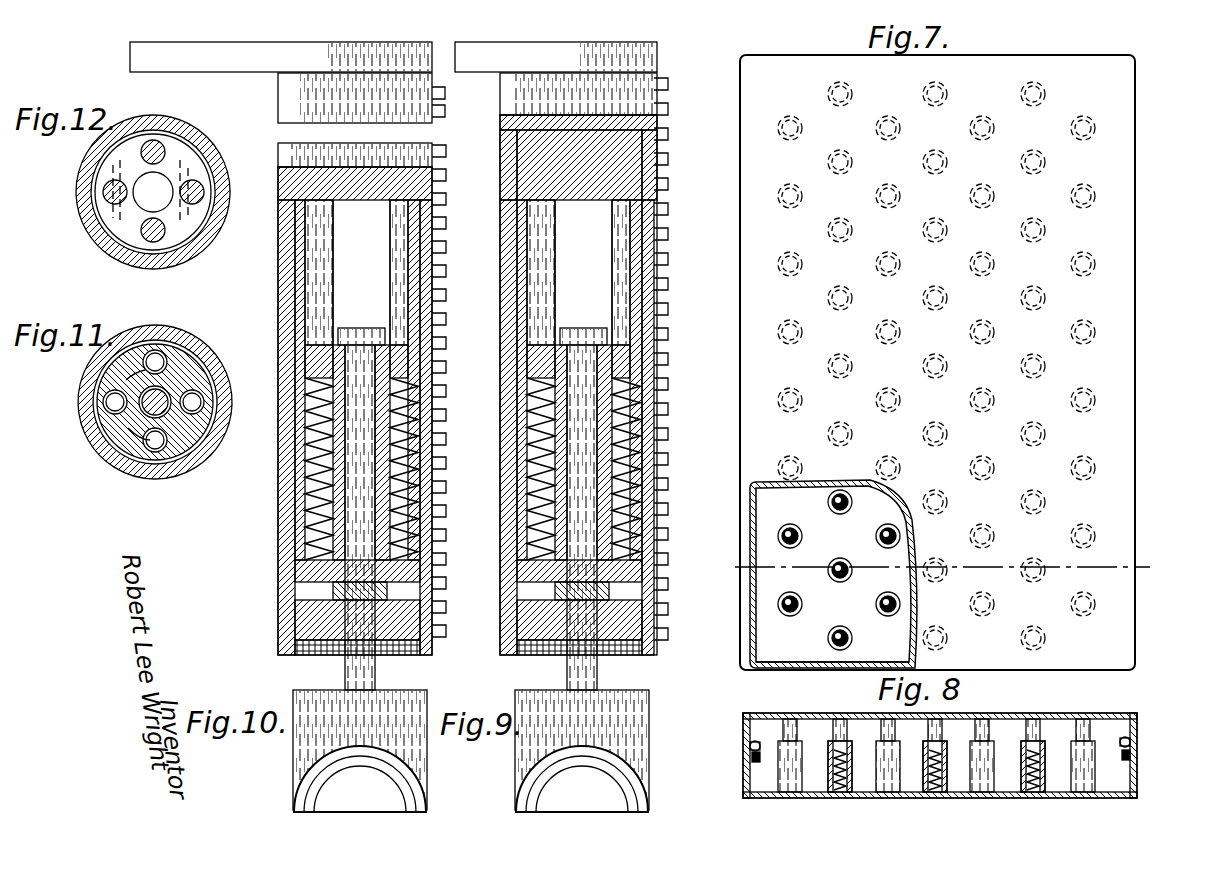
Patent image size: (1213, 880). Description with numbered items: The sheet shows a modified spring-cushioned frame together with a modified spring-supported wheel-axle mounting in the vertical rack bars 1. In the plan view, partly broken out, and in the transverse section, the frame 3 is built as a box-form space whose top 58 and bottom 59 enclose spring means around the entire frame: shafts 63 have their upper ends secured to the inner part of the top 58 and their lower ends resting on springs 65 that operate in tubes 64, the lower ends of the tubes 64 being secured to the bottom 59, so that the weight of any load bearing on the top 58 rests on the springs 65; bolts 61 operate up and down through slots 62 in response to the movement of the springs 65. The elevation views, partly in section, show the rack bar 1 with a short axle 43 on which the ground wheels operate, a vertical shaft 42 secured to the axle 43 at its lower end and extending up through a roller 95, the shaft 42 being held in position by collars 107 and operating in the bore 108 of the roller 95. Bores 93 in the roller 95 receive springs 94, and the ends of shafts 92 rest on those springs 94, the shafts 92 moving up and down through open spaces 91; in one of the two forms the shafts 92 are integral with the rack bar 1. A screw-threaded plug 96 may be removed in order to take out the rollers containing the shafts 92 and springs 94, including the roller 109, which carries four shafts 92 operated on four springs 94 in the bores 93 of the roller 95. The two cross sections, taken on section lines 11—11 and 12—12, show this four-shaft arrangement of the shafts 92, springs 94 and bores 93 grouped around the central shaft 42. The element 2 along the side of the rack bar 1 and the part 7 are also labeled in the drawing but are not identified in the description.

In FIG. 12, the rack bar 1 is at (118, 238).
In FIG. 11, the rack bar 1 is at (140, 478).
In FIG. 10, the rack bar 1 is at (285, 92).
In FIG. 9, the rack bar 1 is at (620, 78).
In FIG. 10, the rack teeth 2 is at (445, 96).
In FIG. 9, the rack teeth 2 is at (668, 93).
In FIG. 7, the frame 3 is at (1137, 193).
In FIG. 8, the frame 3 is at (1062, 712).
In FIG. 12, the guide 7 is at (148, 272).
In FIG. 10, the inner tube 11 is at (370, 420).
In FIG. 9, the inner tube 11 is at (629, 452).
In FIG. 10, the chamber 12 is at (365, 278).
In FIG. 11, the vertical shaft 42 is at (182, 448).
In FIG. 10, the vertical shaft 42 is at (365, 586).
In FIG. 9, the vertical shaft 42 is at (582, 517).
In FIG. 10, the axle 43 is at (300, 786).
In FIG. 9, the axle 43 is at (553, 751).
In FIG. 7, the top of frame 58 is at (745, 482).
In FIG. 8, the top of frame 58 is at (745, 726).
In FIG. 7, the bottom of frame 59 is at (752, 528).
In FIG. 8, the bottom of frame 59 is at (748, 798).
In FIG. 8, the bolt 61 is at (750, 746).
In FIG. 8, the slot 62 is at (752, 760).
In FIG. 7, the shaft 63 is at (886, 532).
In FIG. 8, the shaft 63 is at (836, 738).
In FIG. 7, the tube 64 is at (803, 536).
In FIG. 8, the tube 64 is at (822, 792).
In FIG. 7, the spring 65 is at (838, 582).
In FIG. 8, the spring 65 is at (845, 792).
In FIG. 12, the open space 91 is at (205, 192).
In FIG. 11, the open space 91 is at (160, 345).
In FIG. 10, the open space 91 is at (345, 260).
In FIG. 9, the open space 91 is at (612, 380).
In FIG. 12, the shaft 92 is at (165, 236).
In FIG. 10, the shaft 92 is at (318, 297).
In FIG. 9, the shaft 92 is at (616, 272).
In FIG. 12, the bore 93 is at (103, 190).
In FIG. 11, the bore 93 is at (108, 410).
In FIG. 10, the bore 93 is at (318, 527).
In FIG. 9, the bore 93 is at (617, 469).
In FIG. 11, the spring 94 is at (200, 385).
In FIG. 10, the spring 94 is at (300, 452).
In FIG. 9, the spring 94 is at (603, 427).
In FIG. 12, the roller 95 is at (98, 236).
In FIG. 11, the roller 95 is at (120, 435).
In FIG. 10, the roller 95 is at (433, 579).
In FIG. 9, the roller 95 is at (612, 586).
In FIG. 10, the plug 96 is at (300, 622).
In FIG. 9, the plug 96 is at (612, 623).
In FIG. 12, the collar 107 is at (165, 185).
In FIG. 10, the collar 107 is at (385, 336).
In FIG. 9, the collar 107 is at (615, 427).
In FIG. 11, the bore 108 is at (100, 375).
In FIG. 10, the bore 108 is at (420, 386).
In FIG. 9, the bore 108 is at (625, 373).
In FIG. 9, the roller 109 is at (612, 165).